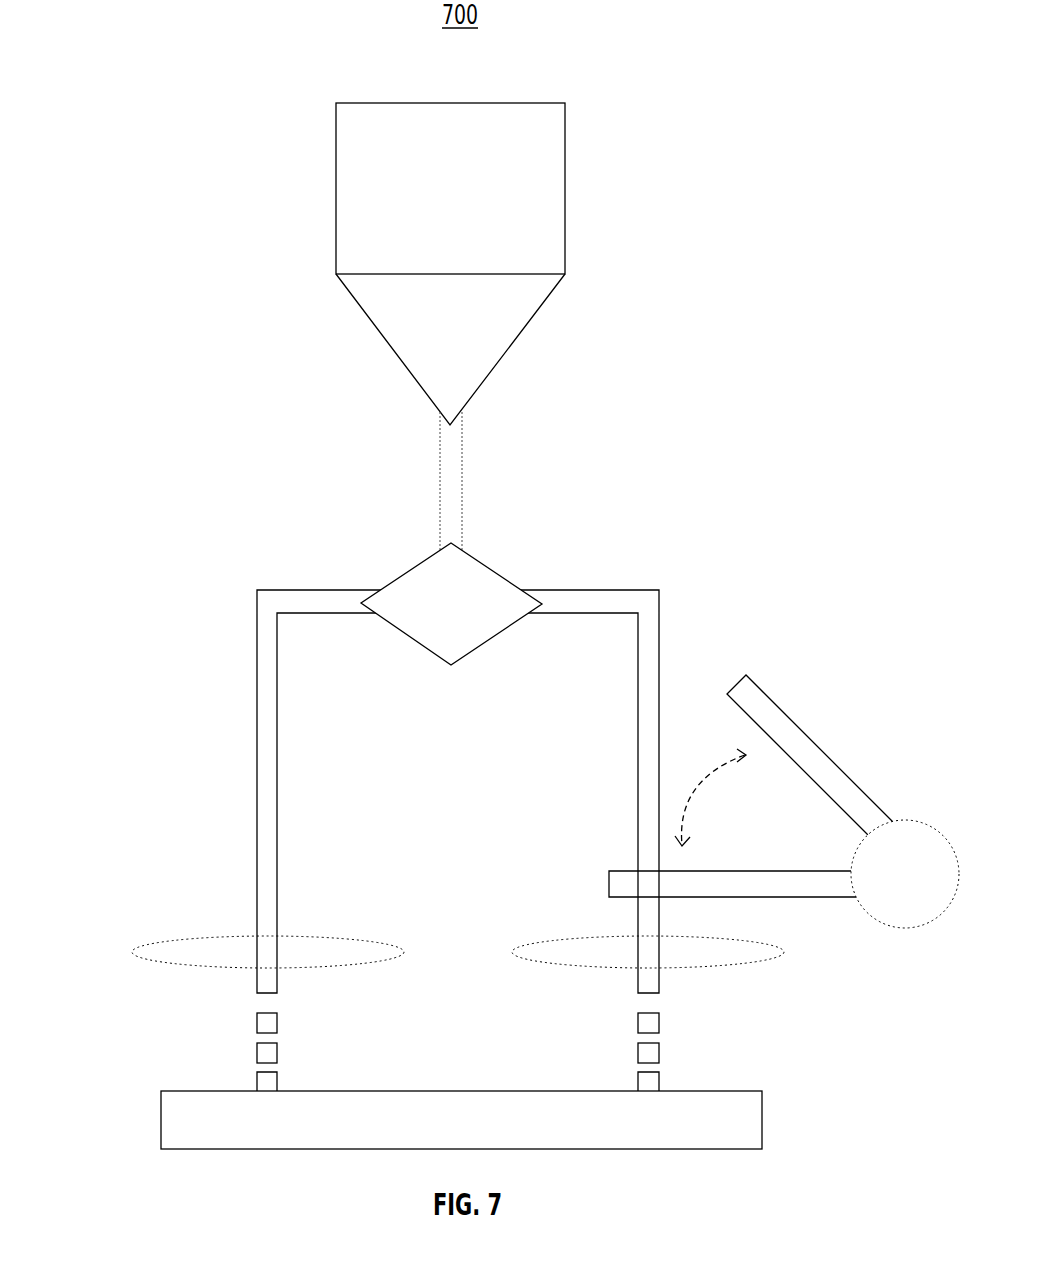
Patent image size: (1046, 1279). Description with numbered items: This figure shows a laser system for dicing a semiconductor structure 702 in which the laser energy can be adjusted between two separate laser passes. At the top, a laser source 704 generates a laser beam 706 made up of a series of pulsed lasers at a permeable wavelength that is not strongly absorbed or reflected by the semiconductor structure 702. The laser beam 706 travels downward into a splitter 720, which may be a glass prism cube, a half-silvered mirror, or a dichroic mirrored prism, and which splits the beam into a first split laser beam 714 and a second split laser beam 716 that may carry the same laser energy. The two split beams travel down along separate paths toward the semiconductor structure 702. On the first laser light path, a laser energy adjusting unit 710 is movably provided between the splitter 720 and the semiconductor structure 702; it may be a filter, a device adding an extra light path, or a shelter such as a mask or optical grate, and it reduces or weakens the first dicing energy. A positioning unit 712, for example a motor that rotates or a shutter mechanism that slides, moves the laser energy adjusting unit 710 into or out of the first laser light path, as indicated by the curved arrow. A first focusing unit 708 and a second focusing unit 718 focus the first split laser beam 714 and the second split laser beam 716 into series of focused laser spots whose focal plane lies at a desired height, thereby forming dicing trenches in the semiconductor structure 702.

The semiconductor structure 702 is at (532, 1115).
The laser source 704 is at (519, 264).
The laser beam 706 is at (537, 482).
The first focusing unit 708 is at (699, 963).
The laser energy adjusting unit 710 is at (758, 786).
The positioning unit 712 is at (905, 850).
The first split laser beam 714 is at (640, 832).
The second split laser beam 716 is at (289, 831).
The second focusing unit 718 is at (223, 918).
The splitter 720 is at (451, 647).